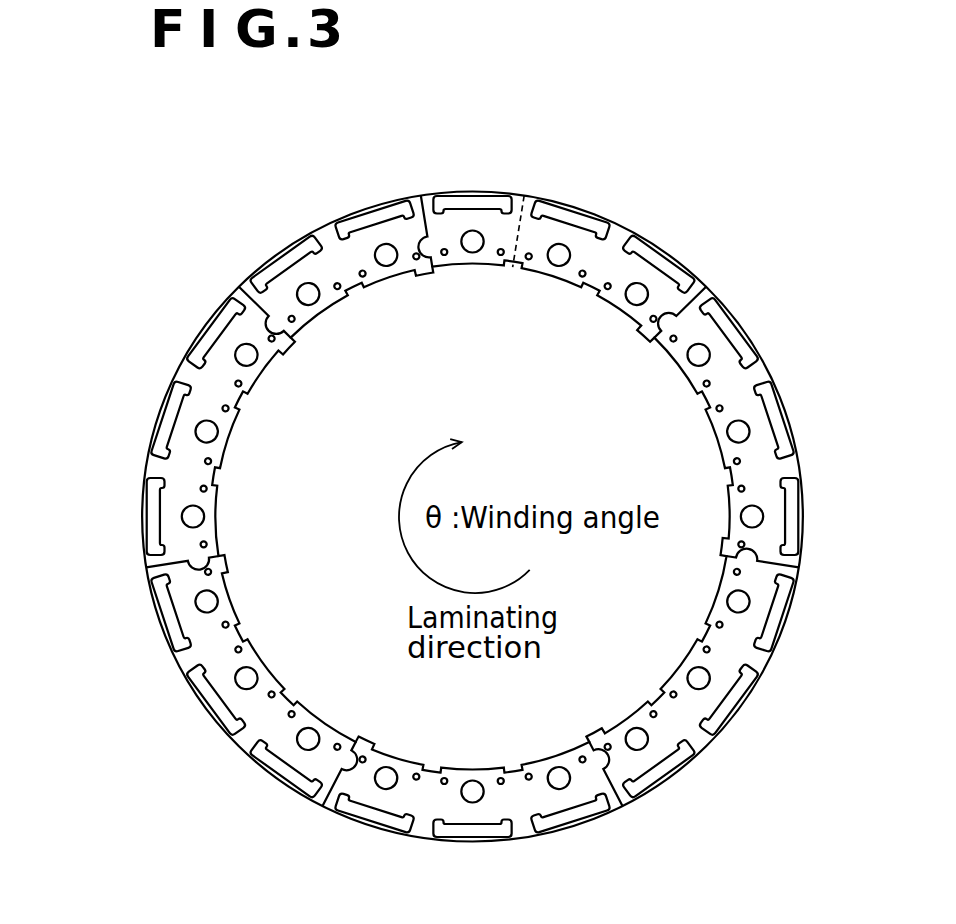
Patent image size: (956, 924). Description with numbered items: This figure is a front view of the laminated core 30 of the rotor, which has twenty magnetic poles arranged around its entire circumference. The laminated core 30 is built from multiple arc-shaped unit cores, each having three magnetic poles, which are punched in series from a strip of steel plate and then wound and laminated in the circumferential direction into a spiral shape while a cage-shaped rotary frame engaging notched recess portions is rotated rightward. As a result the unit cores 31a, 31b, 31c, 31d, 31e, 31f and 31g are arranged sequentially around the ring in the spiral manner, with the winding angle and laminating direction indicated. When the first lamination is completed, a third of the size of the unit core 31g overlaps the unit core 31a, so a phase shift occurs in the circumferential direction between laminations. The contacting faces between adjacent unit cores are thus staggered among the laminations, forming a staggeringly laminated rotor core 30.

The laminated core 30 is at (755, 297).
The unit core 31a is at (532, 150).
The unit core 31b is at (228, 418).
The unit core 31c is at (267, 678).
The unit core 31d is at (460, 767).
The unit core 31e is at (693, 657).
The unit core 31f is at (717, 423).
The unit core 31g is at (715, 282).